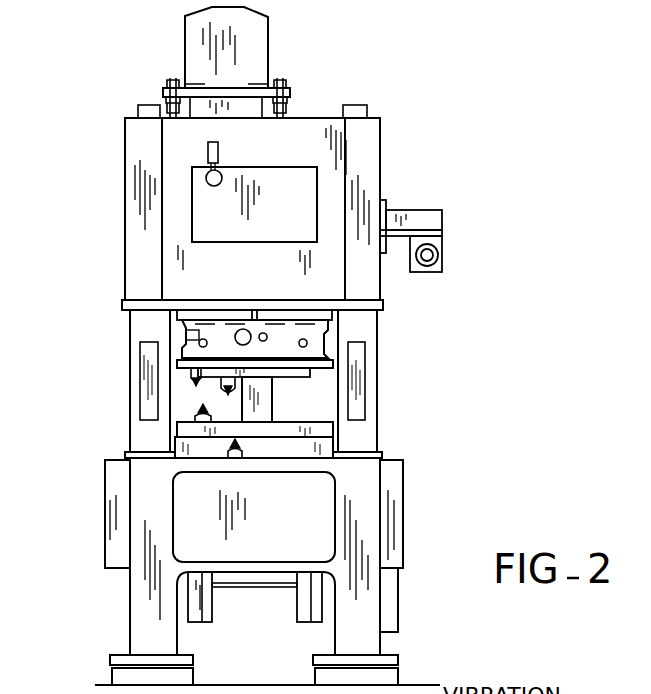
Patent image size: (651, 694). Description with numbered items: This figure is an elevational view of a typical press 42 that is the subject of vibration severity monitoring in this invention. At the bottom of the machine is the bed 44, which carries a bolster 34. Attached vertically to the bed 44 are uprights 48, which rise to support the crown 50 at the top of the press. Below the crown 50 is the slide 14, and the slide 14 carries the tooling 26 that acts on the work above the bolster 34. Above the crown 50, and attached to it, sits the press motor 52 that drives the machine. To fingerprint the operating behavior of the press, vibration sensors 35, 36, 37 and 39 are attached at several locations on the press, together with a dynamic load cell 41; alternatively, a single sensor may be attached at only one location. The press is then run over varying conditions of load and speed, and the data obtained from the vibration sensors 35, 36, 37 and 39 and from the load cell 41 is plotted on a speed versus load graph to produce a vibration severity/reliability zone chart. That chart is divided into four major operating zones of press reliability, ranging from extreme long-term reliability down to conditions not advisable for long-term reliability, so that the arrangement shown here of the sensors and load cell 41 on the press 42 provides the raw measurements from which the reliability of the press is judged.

The slide 14 is at (326, 336).
The tooling 26 is at (257, 368).
The bolster 34 is at (178, 443).
The vibration sensor 35 is at (182, 372).
The vibration sensor 36 is at (198, 418).
The vibration sensor 37 is at (222, 384).
The vibration sensor 39 is at (228, 462).
The dynamic load cell 41 is at (265, 404).
The press 42 is at (118, 218).
The bed 44 is at (377, 487).
The uprights 48 is at (377, 371).
The crown 50 is at (312, 120).
The press motor 52 is at (190, 42).